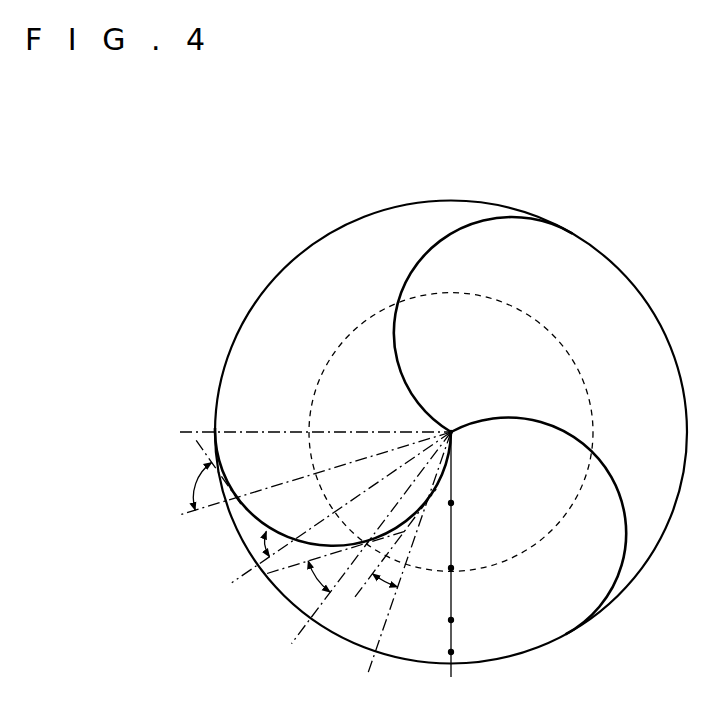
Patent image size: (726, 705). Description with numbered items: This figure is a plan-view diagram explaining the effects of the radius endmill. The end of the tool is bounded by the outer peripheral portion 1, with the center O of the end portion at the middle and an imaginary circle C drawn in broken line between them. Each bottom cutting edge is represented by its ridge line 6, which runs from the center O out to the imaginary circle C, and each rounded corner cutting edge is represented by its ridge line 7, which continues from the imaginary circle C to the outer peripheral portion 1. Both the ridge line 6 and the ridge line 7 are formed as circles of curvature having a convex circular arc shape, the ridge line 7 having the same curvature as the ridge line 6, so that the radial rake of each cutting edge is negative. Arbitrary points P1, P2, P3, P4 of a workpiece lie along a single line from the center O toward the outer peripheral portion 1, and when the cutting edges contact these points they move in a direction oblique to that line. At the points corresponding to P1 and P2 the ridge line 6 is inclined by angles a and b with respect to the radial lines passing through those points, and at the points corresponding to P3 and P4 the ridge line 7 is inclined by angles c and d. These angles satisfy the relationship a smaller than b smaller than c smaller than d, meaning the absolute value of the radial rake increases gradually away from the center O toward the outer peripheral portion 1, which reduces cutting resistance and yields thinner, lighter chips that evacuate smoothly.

The outer peripheral portion 1 is at (262, 296).
The ridge line of bottom cutting edge 6 is at (392, 340).
The ridge line of rounded corner cutting edge 7 is at (433, 243).
The imaginary circle C is at (504, 300).
The center O is at (319, 539).
The point of workpiece P1 is at (452, 503).
The point of workpiece P2 is at (452, 568).
The point of workpiece P3 is at (452, 620).
The point of workpiece P4 is at (452, 652).
The angle of inclination a is at (395, 557).
The angle of inclination b is at (336, 571).
The angle of inclination c is at (248, 550).
The angle of inclination d is at (207, 475).